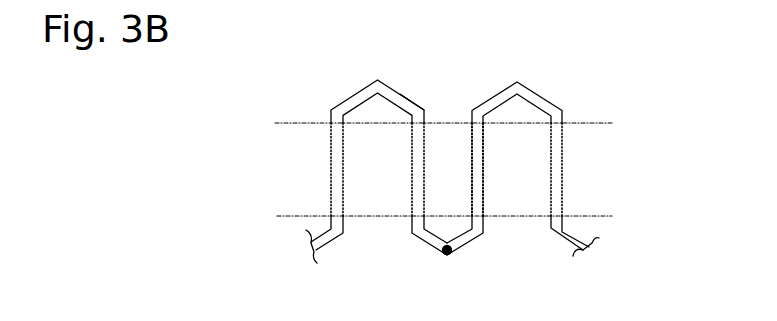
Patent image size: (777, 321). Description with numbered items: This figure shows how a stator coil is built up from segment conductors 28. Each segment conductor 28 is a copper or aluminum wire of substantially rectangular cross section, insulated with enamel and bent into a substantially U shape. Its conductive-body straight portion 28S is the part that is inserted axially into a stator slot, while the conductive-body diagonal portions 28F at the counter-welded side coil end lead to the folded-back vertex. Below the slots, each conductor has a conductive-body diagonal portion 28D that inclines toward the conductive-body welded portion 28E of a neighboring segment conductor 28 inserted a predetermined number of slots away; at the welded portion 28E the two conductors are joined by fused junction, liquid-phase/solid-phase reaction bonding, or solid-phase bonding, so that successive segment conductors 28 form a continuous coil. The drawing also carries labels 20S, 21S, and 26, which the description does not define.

The substrate surface 20S is at (563, 178).
The stippled side surface regions 21S is at (330, 155).
The first arch portion 26 is at (400, 94).
The conductive-body diagonal portions of the counter-welded side coil end 28F is at (416, 99).
The segment conductor 28 is at (541, 97).
The conductive-body straight portion 28S is at (473, 182).
The conductive-body diagonal portion 28D is at (473, 237).
The conductive-body welded portion 28E is at (449, 254).